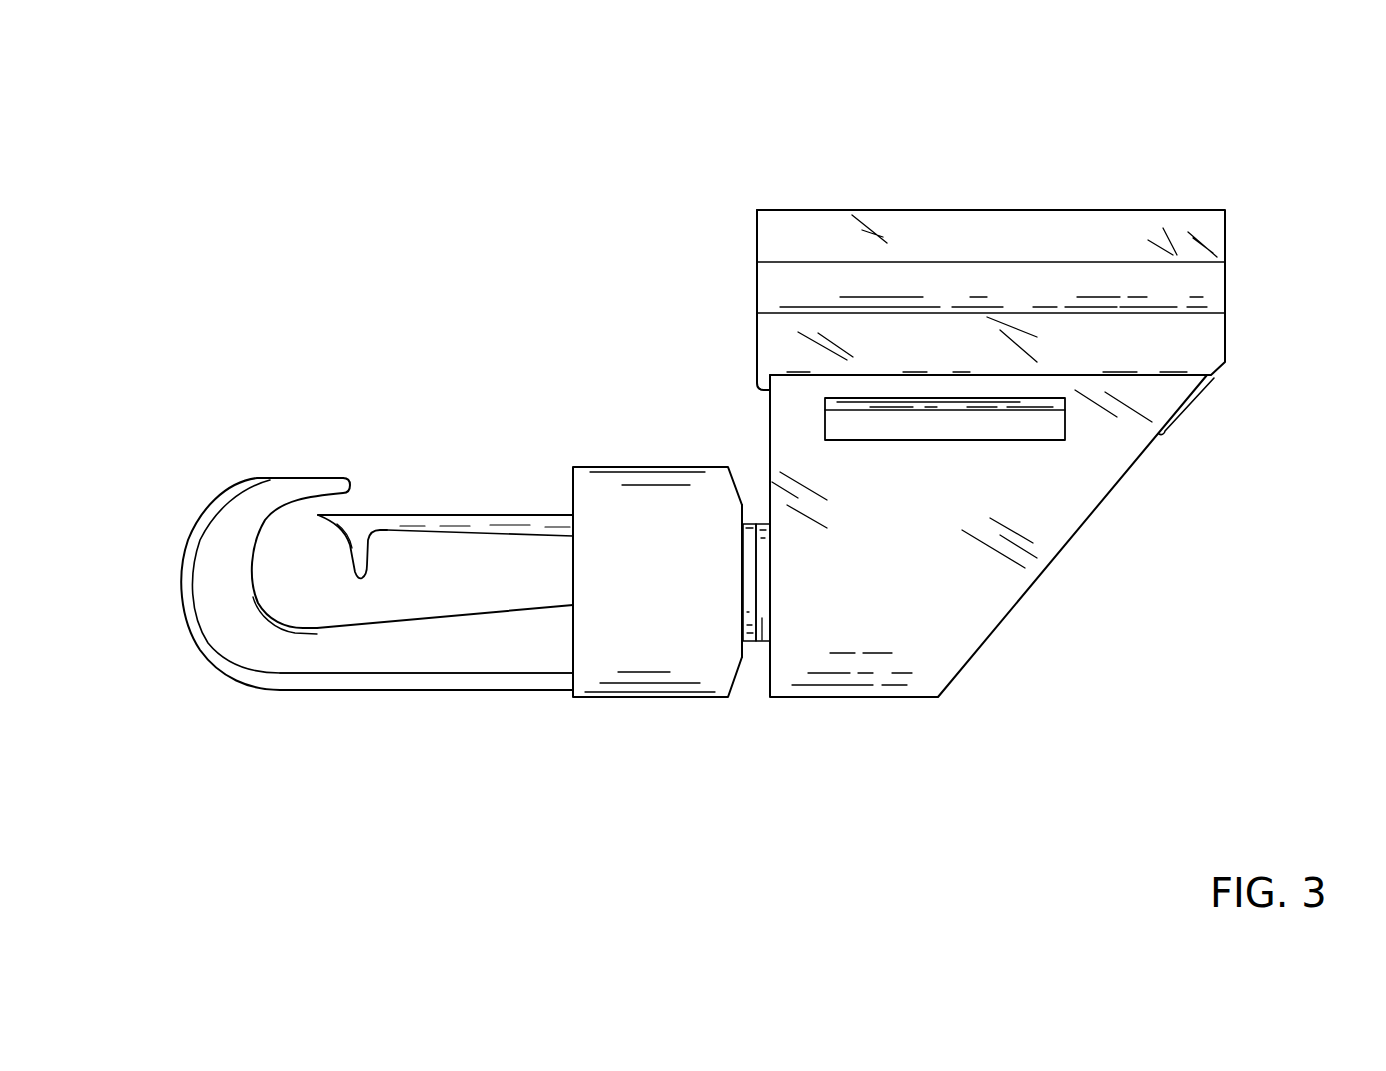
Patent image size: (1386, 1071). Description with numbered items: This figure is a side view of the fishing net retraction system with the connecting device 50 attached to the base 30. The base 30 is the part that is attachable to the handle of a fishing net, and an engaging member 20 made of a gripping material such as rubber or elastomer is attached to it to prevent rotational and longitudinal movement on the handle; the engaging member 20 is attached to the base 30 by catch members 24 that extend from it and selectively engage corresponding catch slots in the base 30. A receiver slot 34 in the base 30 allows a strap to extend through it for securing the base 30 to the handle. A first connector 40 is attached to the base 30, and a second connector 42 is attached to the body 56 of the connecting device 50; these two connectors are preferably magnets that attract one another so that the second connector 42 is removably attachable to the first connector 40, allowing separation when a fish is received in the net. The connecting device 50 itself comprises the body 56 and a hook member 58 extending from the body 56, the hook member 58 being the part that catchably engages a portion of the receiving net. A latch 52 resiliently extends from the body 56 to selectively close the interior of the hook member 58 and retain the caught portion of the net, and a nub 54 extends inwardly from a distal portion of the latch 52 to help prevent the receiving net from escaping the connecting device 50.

The engaging member 20 is at (850, 210).
The catch members 24 is at (760, 385).
The base 30 is at (958, 670).
The receiver slot 34 is at (1017, 440).
The first connector 40 is at (760, 617).
The second connector 42 is at (748, 524).
The connecting device 50 is at (298, 476).
The latch 52 is at (450, 522).
The nub 54 is at (363, 567).
The body 56 is at (592, 670).
The hook member 58 is at (265, 653).